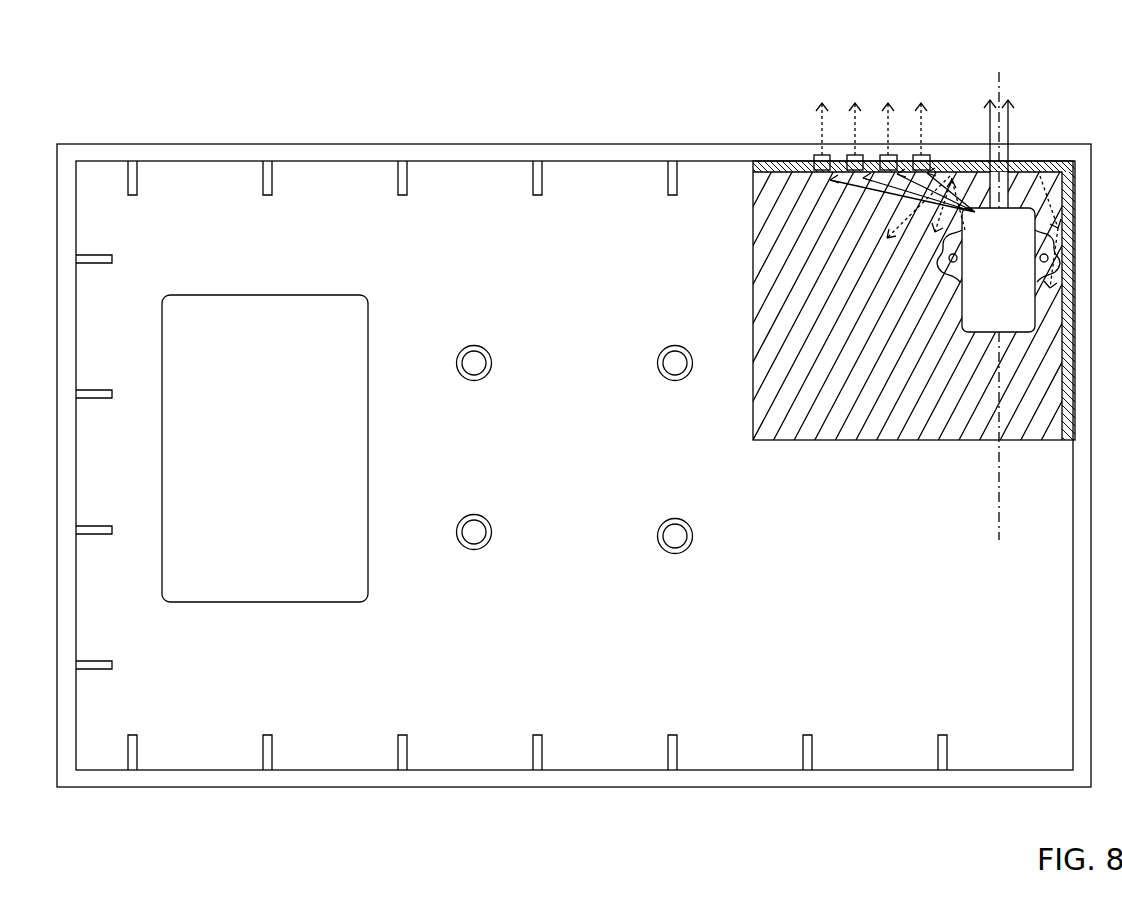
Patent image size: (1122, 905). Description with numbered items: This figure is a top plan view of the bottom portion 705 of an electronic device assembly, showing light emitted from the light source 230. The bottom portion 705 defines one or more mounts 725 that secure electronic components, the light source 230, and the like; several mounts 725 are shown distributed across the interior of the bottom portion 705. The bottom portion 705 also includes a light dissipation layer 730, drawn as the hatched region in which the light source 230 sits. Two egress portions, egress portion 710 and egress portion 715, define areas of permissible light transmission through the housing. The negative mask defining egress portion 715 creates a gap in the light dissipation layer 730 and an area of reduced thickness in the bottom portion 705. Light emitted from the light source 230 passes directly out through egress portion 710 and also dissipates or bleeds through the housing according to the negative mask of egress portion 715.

The bottom portion 705 is at (1080, 25).
The egress portion 710 is at (1001, 295).
The egress portion 715 is at (930, 143).
The mounts 725 is at (342, 330).
The light dissipation layer 730 is at (841, 260).
The light source 230 is at (998, 232).